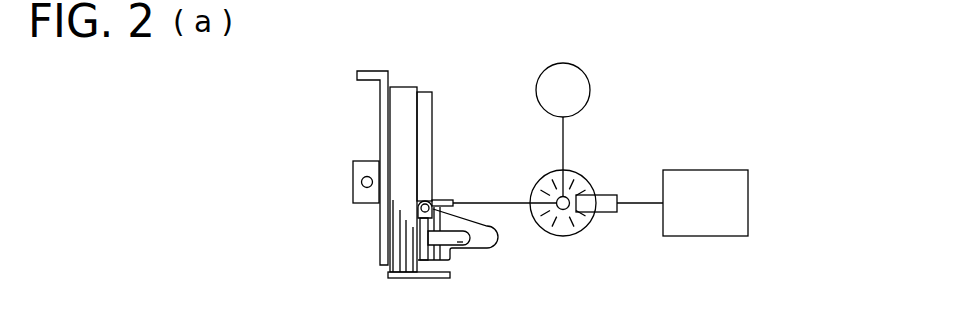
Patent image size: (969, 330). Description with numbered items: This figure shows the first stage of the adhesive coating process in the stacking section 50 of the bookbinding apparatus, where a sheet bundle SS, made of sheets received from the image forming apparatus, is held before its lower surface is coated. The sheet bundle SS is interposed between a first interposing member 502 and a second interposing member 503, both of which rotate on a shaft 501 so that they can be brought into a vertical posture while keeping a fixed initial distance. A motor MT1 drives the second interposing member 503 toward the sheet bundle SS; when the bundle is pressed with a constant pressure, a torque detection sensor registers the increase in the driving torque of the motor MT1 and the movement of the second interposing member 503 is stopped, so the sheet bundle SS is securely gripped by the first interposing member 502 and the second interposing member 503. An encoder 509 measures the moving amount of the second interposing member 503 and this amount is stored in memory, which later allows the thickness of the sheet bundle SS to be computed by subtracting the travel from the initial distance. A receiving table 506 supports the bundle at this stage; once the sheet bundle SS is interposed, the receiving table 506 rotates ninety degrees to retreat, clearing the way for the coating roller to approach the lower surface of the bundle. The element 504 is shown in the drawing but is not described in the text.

The stacking section 50 is at (329, 183).
The shaft 501 is at (367, 176).
The first interposing member 502 is at (380, 247).
The second interposing member 503 is at (441, 200).
The link lever 504 is at (472, 249).
The receiving table 506 is at (422, 279).
The encoder 509 is at (748, 240).
The sheet bundle SS is at (402, 87).
The motor MT1 is at (565, 73).